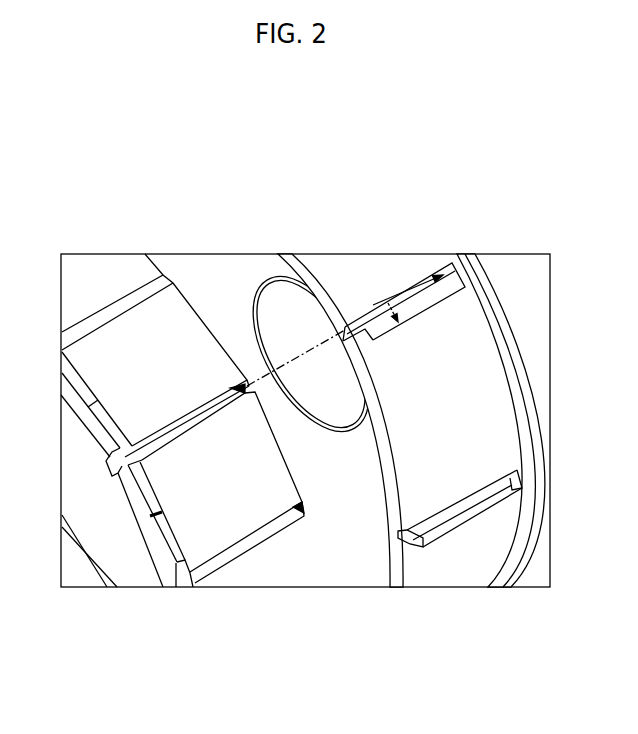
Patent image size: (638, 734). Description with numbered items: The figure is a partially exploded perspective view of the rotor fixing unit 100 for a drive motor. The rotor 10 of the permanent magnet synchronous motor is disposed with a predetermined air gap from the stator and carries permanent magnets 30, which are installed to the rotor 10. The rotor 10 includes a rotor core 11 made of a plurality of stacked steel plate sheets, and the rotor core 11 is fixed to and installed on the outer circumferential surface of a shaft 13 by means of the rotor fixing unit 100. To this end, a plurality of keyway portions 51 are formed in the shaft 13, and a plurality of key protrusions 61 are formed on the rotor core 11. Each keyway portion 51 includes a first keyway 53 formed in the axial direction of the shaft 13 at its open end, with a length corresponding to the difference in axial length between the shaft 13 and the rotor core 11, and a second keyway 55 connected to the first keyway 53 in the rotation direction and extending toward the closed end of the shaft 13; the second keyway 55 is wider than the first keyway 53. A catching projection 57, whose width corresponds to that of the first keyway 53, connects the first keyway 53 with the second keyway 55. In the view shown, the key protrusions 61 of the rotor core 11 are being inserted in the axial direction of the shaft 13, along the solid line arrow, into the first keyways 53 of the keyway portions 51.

The rotor fixing unit 100 is at (273, 181).
The rotor 10 is at (411, 480).
The rotor core 11 is at (280, 592).
The shaft 13 is at (418, 592).
The permanent magnets 30 is at (167, 538).
The keyway portion 51 is at (468, 325).
The first keyway 53 is at (353, 333).
The second keyway 55 is at (450, 298).
The catching projection 57 is at (368, 330).
The key protrusion 61 is at (108, 462).